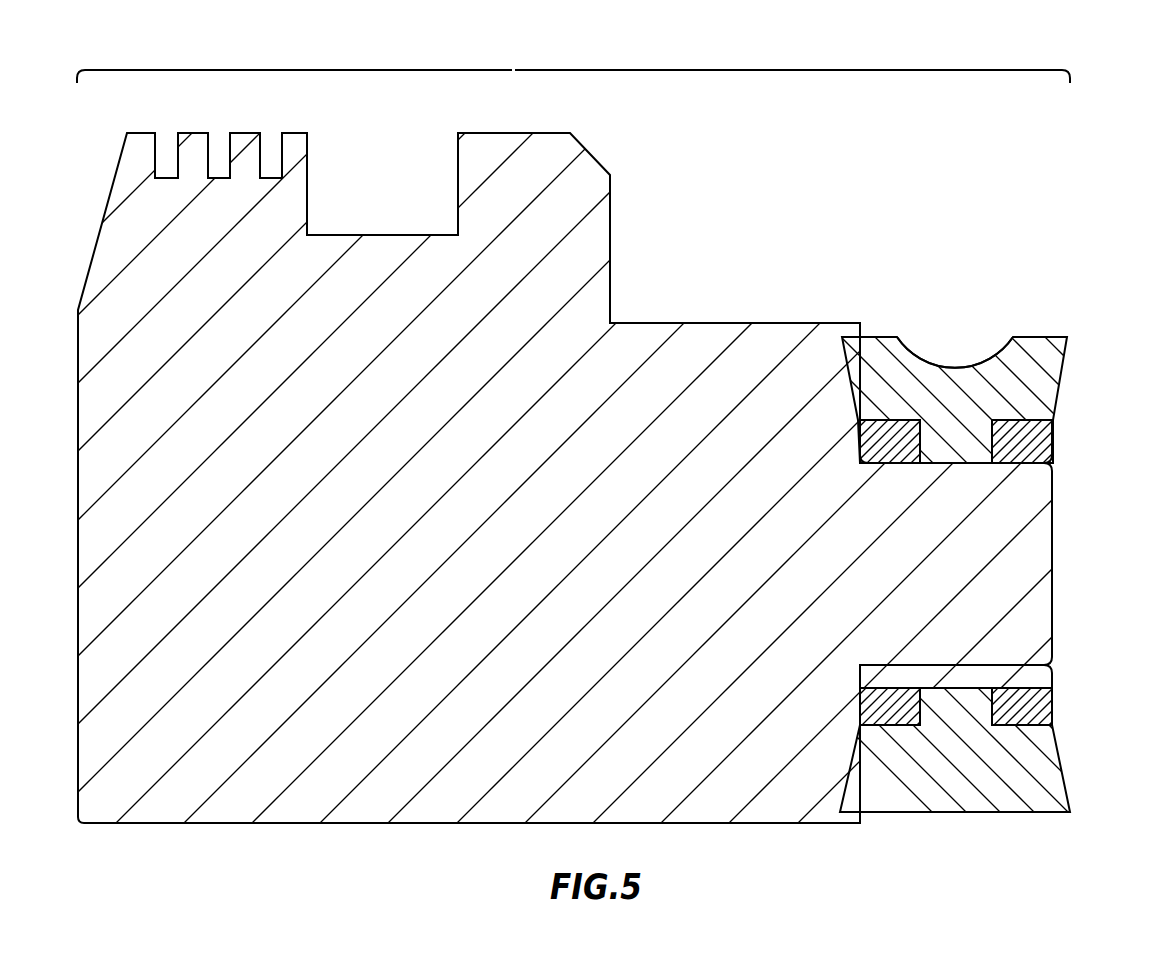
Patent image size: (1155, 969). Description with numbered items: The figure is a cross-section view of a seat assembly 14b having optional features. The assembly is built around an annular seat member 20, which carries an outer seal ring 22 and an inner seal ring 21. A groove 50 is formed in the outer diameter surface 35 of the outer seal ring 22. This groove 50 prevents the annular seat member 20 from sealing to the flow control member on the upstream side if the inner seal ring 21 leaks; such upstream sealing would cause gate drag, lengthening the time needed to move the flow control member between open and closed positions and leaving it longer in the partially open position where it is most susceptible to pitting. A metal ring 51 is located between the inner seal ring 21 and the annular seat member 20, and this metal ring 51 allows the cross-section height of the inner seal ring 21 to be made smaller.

The seat assembly 14b is at (512, 70).
The annular seat member 20 is at (420, 492).
The outer seal ring 22 is at (968, 414).
The inner seal ring 21 is at (975, 754).
The outer diameter surface 35 is at (882, 337).
The groove 50 is at (967, 366).
The metal ring 51 is at (1055, 680).